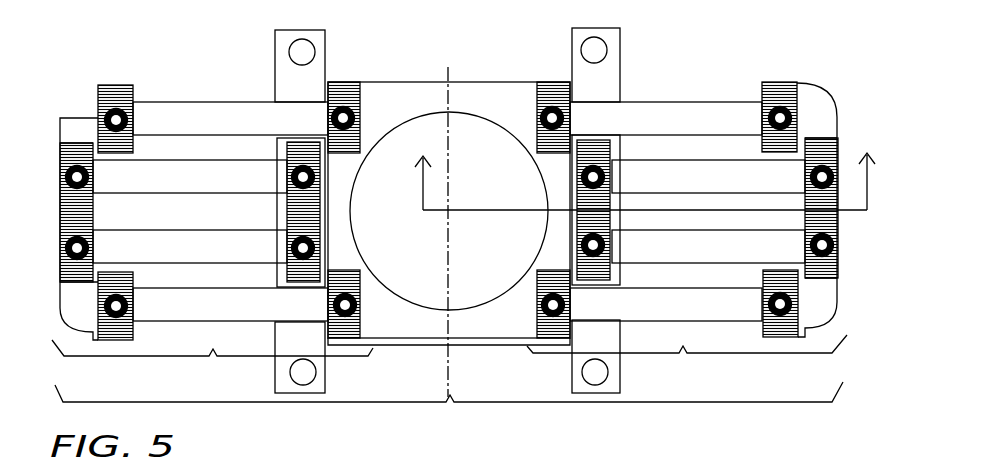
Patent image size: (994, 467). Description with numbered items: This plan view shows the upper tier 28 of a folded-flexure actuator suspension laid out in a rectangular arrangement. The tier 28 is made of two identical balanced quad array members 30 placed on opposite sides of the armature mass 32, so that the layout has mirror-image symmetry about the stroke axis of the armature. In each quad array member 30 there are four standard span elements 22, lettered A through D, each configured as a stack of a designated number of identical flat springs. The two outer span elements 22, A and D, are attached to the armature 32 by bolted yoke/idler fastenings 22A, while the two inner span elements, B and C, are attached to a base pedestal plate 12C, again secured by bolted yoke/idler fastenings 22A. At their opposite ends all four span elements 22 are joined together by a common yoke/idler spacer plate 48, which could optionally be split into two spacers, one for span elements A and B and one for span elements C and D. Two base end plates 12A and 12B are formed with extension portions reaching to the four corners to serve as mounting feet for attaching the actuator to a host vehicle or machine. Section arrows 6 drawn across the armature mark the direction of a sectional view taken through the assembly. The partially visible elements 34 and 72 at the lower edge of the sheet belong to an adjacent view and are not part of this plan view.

The common yoke/idler spacer plate 48 is at (78, 123).
The base end plate 12A is at (288, 76).
The base end plate 12B is at (605, 80).
The base pedestal plate 12C is at (283, 213).
The standard span element 22 is at (224, 317).
The bolted yoke/idler fastening 22A is at (343, 112).
The armature mass 32 is at (441, 298).
The section line 6- 6 is at (645, 171).
The balanced quad array member 30 is at (449, 361).
The tier 28 is at (449, 409).
The element 34 (FIG. 6, partial) 34 is at (445, 466).
The element 72 (FIG. 6, partial) 72 is at (515, 466).